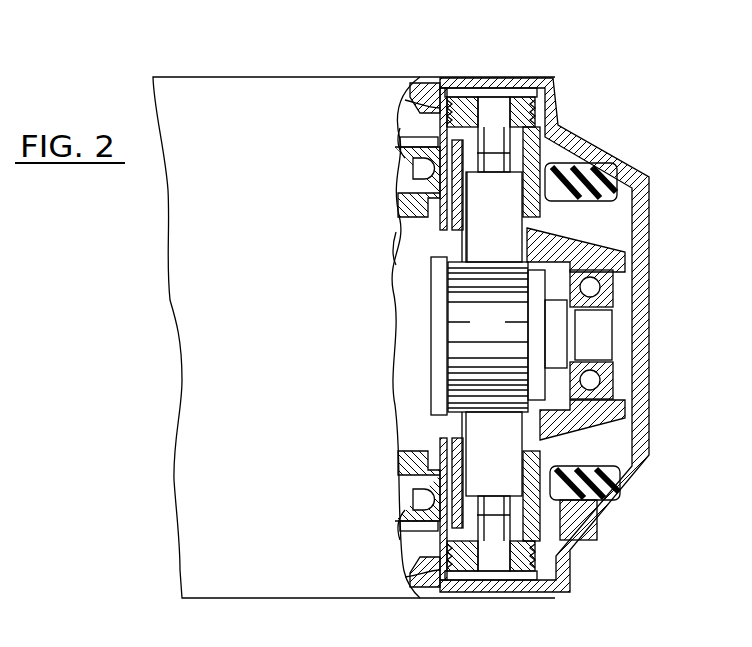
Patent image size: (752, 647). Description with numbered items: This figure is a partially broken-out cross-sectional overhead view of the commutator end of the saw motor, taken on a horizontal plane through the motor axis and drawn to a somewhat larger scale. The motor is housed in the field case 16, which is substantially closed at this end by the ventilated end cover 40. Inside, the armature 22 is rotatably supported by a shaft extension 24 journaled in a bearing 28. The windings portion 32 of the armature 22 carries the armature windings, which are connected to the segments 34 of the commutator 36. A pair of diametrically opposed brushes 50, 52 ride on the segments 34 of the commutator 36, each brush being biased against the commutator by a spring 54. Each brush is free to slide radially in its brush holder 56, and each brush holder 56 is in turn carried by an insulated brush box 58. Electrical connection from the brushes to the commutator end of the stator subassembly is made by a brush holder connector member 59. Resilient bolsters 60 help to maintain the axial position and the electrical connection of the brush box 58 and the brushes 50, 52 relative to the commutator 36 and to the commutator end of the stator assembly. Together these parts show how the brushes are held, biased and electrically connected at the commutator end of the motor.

The field case 16 is at (275, 77).
The armature 22 is at (403, 243).
The shaft extension 24 is at (590, 398).
The bearing 28 is at (592, 290).
The windings portion 32 is at (399, 290).
The segments 34 is at (501, 331).
The commutator 36 is at (458, 343).
The ventilated end cover 40 is at (650, 250).
The brush 50 is at (505, 229).
The brush 52 is at (511, 460).
The spring 54 is at (484, 135).
The brush holder 56 is at (398, 199).
The brush box 58 is at (405, 100).
The brush holder connector member 59 is at (400, 128).
The resilient bolsters 60 is at (570, 201).